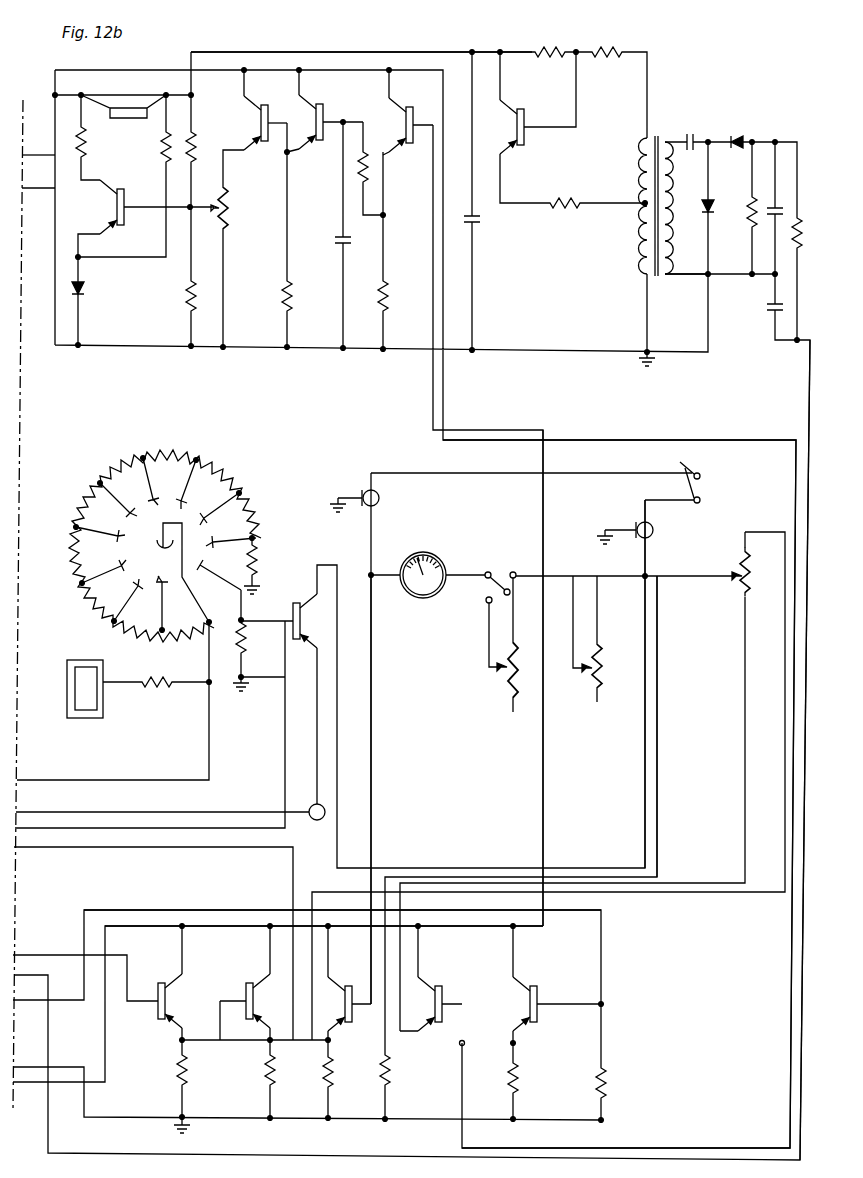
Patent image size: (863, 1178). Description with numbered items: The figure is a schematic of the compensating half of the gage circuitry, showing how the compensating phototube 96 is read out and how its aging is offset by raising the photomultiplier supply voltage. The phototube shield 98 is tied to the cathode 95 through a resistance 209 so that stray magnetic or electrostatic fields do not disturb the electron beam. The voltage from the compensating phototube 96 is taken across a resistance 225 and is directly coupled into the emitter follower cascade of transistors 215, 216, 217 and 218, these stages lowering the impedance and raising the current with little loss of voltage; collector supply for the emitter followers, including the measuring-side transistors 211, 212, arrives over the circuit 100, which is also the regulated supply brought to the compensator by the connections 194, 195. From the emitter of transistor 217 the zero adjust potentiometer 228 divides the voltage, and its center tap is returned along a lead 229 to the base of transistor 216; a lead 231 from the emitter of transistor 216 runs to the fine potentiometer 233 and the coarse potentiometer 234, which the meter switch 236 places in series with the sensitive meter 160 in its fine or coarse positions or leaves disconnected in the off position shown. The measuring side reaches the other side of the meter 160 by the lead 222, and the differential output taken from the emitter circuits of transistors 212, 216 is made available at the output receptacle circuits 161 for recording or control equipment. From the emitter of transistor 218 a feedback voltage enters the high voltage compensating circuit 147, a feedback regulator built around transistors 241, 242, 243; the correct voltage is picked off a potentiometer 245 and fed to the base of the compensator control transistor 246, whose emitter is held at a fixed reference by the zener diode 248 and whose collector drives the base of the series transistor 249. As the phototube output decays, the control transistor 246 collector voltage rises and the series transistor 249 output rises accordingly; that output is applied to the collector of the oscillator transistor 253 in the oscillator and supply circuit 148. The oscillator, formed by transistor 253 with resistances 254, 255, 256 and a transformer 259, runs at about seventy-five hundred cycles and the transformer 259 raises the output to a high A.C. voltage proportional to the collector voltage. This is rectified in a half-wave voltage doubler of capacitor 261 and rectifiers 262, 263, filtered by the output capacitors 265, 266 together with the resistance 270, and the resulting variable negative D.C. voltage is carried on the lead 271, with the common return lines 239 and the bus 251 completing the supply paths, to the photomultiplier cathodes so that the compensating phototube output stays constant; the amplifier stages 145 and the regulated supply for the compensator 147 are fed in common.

The cathode 95 is at (167, 523).
The compensating phototube 96 is at (112, 593).
The phototube shield 98 is at (92, 718).
The circuit 100 is at (545, 752).
The amplifier circuit 145 is at (342, 944).
The high voltage compensating circuit 147 is at (319, 272).
The high voltage oscillator circuit 148 is at (515, 254).
The meter 160 is at (414, 597).
The output receptacle circuits 161 is at (724, 480).
The connection 194 is at (30, 156).
The connection 195 is at (64, 203).
The resistance 209 is at (163, 687).
The transistor 211 is at (157, 988).
The transistor 212 is at (248, 988).
The transistor 215 is at (295, 628).
The transistor 216 is at (350, 1022).
The transistor 217 is at (437, 1022).
The transistor 218 is at (535, 1022).
The lead 222 is at (371, 758).
The resistance 225 is at (233, 663).
The zero adjust potentiometer 228 is at (741, 557).
The lead 229 is at (657, 810).
The lead 231 is at (643, 737).
The fine potentiometer 233 is at (600, 652).
The coarse potentiometer 234 is at (510, 683).
The meter switch 236 is at (503, 582).
The common line 239 is at (596, 440).
The transistor 241 is at (263, 146).
The transistor 242 is at (320, 146).
The transistor 243 is at (409, 148).
The potentiometer 245 is at (228, 223).
The compensator control transistor 246 is at (126, 224).
The zener diode 248 is at (84, 295).
The series transistor 249 is at (142, 106).
The supply line 251 is at (368, 53).
The oscillator transistor 253 is at (523, 148).
The resistance 254 is at (556, 42).
The resistance 255 is at (600, 52).
The resistor 256 is at (563, 205).
The transformer 259 is at (672, 126).
The capacitor 261 is at (693, 136).
The rectifier 262 is at (711, 208).
The rectifier 263 is at (740, 137).
The output capacitor 265 is at (752, 210).
The output capacitor 266 is at (767, 308).
The resistance 270 is at (797, 240).
The lead 271 is at (802, 985).